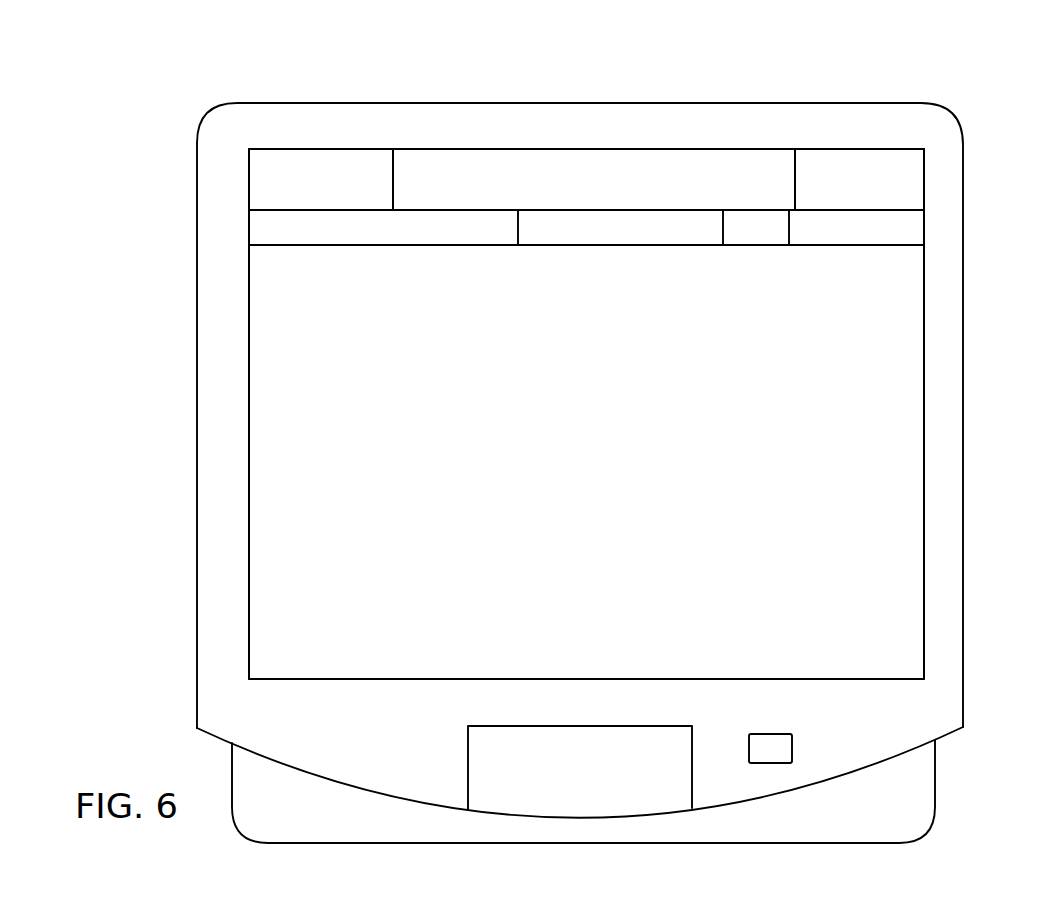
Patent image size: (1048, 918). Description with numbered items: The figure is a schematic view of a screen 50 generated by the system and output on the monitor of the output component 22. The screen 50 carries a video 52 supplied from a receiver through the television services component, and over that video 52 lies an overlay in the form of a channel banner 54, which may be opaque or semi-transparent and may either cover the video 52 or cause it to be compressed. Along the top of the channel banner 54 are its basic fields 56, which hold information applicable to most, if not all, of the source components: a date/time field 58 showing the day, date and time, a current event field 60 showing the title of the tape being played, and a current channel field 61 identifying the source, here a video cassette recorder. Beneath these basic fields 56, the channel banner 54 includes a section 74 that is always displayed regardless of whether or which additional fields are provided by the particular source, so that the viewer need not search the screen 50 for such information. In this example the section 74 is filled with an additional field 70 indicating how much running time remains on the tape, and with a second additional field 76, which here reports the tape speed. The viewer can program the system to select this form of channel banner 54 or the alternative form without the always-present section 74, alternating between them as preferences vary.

The output component 22 is at (195, 322).
The screen 50 is at (252, 423).
The video 52 is at (273, 478).
The channel banner 54 is at (712, 145).
The basic fields 56 is at (924, 177).
The date/time field 58 is at (305, 158).
The current event field 60 is at (418, 160).
The current channel field 61 is at (860, 158).
The additional field 70 is at (537, 233).
The section 74 is at (408, 233).
The second additional field 76 is at (733, 238).